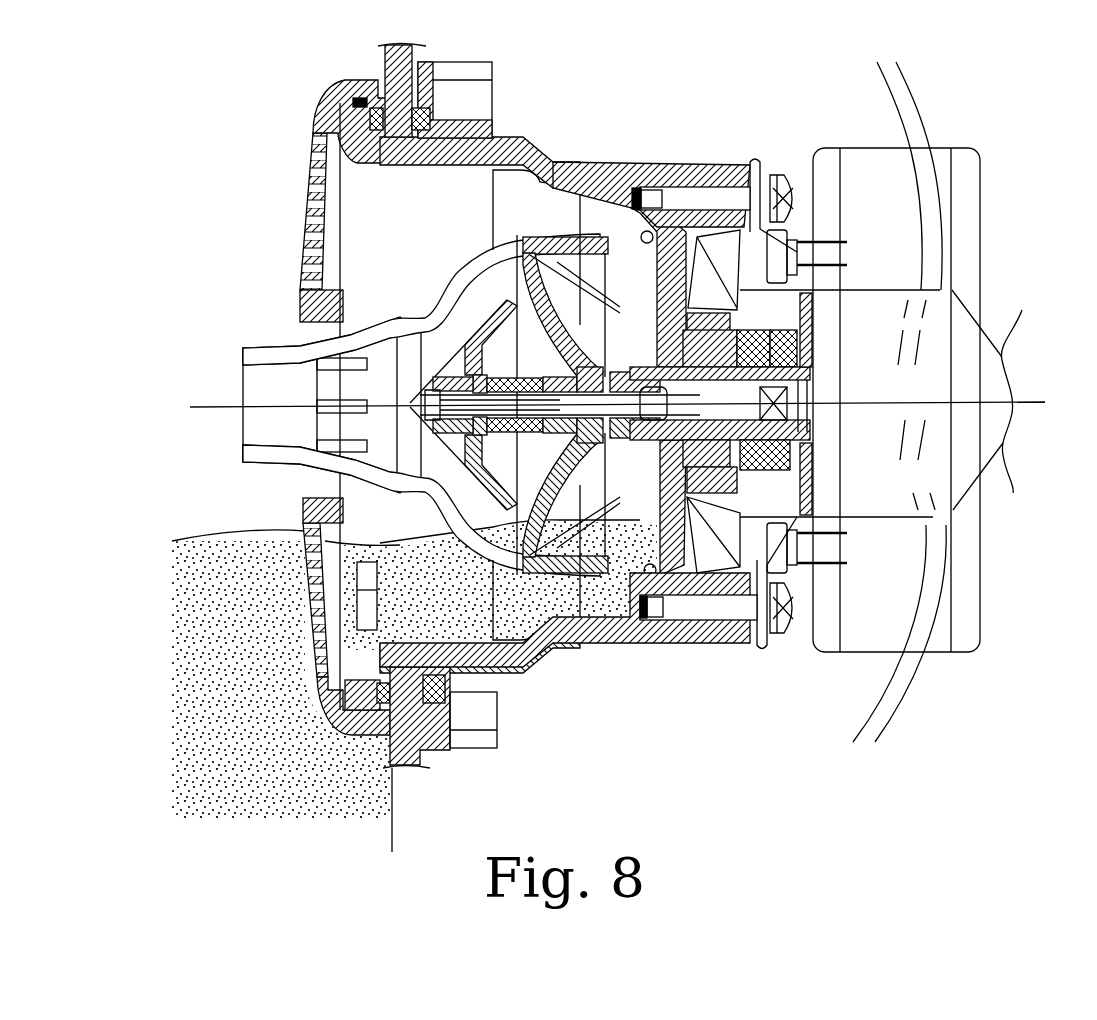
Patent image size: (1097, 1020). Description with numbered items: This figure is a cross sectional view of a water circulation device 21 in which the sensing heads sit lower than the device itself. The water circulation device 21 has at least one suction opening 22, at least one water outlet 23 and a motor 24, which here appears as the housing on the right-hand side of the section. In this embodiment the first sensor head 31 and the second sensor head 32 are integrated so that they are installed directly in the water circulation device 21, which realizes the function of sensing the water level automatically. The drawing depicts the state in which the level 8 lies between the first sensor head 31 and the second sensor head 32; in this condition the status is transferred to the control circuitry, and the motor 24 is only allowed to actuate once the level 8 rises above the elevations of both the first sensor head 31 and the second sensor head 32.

The level 8 is at (207, 530).
The water circulation device 21 is at (616, 98).
The suction opening 22 is at (310, 145).
The water outlet 23 is at (253, 388).
The motor 24 is at (963, 212).
The first sensor head 31 is at (710, 177).
The second sensor head 32 is at (620, 643).